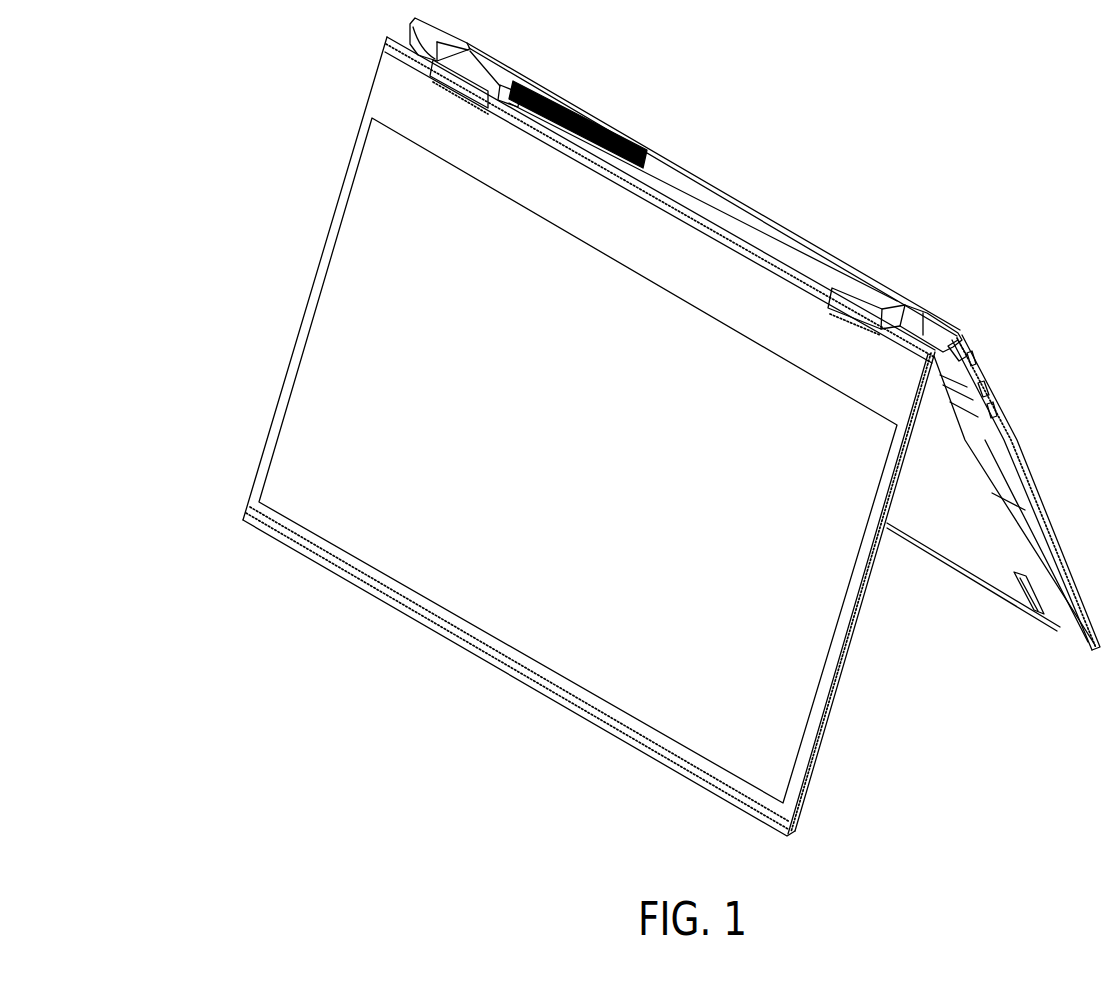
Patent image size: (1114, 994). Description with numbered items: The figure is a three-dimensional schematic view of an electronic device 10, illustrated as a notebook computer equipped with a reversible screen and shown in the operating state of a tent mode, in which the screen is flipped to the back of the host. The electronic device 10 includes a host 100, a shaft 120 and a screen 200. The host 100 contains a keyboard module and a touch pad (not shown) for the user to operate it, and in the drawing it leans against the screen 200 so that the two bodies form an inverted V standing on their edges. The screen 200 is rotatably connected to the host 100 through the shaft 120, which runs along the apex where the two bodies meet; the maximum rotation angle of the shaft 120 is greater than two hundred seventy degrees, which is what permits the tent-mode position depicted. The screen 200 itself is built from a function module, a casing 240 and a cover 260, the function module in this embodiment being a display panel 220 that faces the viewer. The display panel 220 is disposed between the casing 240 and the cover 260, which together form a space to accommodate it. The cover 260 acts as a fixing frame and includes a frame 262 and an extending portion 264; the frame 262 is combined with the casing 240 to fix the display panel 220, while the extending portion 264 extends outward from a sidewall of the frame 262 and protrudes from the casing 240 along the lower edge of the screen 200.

The electronic device 10 is at (851, 168).
The host 100 is at (1021, 462).
The shaft 120 is at (873, 312).
The screen 200 is at (238, 178).
The display panel 220 is at (369, 376).
The casing 240 is at (839, 683).
The cover 260 is at (585, 803).
The frame 262 is at (586, 697).
The extending portion 264 is at (484, 662).